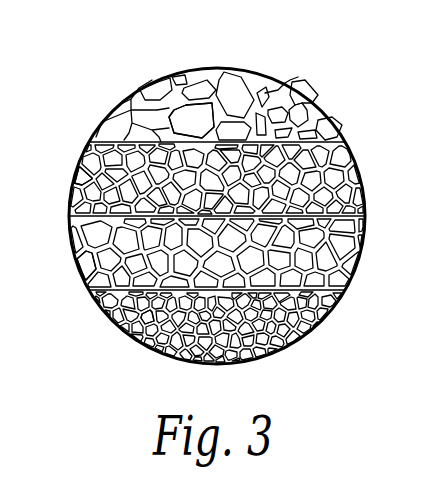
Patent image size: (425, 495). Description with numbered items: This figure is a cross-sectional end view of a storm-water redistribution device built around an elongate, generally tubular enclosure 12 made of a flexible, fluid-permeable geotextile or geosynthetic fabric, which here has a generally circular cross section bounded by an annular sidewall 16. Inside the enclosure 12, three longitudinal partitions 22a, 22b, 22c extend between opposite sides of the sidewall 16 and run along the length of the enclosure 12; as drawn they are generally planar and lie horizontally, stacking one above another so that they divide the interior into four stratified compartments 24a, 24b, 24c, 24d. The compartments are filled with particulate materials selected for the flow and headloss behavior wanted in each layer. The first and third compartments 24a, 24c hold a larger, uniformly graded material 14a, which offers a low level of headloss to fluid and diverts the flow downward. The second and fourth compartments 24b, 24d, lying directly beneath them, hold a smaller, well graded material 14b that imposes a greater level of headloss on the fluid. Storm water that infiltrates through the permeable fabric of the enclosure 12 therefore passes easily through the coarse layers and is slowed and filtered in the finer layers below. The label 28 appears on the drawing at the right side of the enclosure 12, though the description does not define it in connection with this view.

The enclosure 12 is at (212, 67).
The sidewall 16 is at (311, 97).
The larger, uniformly graded material 14a is at (181, 114).
The smaller, well graded material 14b is at (97, 167).
The compartment 24a is at (292, 127).
The compartment 24b is at (327, 170).
The compartment 24c is at (359, 257).
The compartment 24d is at (312, 330).
The longitudinal partition 22a is at (312, 138).
The longitudinal partition 22b is at (337, 215).
The longitudinal partition 22c is at (315, 318).
The outer surface 28 is at (400, 260).